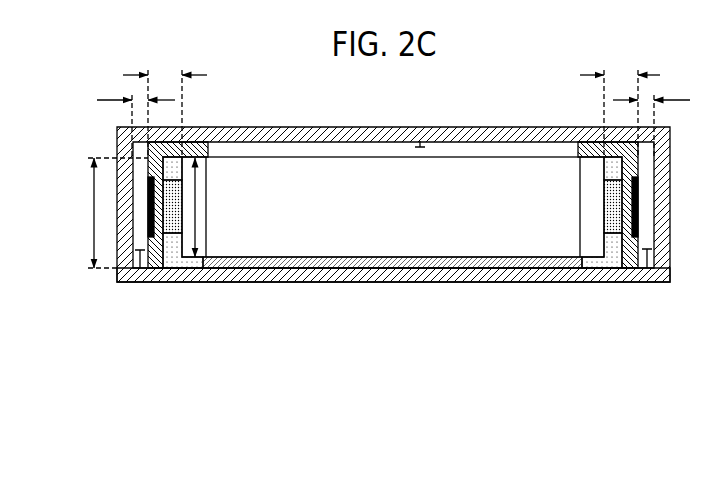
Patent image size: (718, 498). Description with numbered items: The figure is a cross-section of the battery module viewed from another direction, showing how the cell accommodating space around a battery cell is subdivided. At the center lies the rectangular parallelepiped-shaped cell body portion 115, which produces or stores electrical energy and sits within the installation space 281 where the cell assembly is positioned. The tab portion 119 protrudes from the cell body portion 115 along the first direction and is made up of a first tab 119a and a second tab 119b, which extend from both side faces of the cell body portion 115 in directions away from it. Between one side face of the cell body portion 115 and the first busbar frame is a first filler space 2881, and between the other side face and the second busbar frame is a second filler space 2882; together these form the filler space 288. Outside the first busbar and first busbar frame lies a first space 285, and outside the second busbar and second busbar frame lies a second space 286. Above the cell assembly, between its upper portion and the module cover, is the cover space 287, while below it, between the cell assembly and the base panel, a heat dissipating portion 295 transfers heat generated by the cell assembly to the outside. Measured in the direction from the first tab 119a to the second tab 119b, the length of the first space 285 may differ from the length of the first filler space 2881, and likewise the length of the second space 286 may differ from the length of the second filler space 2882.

The cell body portion 115 is at (307, 172).
The cover space 287 is at (421, 143).
The first space 285 is at (139, 268).
The second space 286 is at (648, 268).
The first tab 119a is at (169, 235).
The second tab 119b is at (616, 235).
The tab portion 119 is at (392, 261).
The first filler space 2881 is at (178, 264).
The second filler space 2882 is at (607, 264).
The filler space 288 is at (392, 258).
The installation space 281 is at (360, 263).
The heat dissipating portion 295 is at (440, 266).